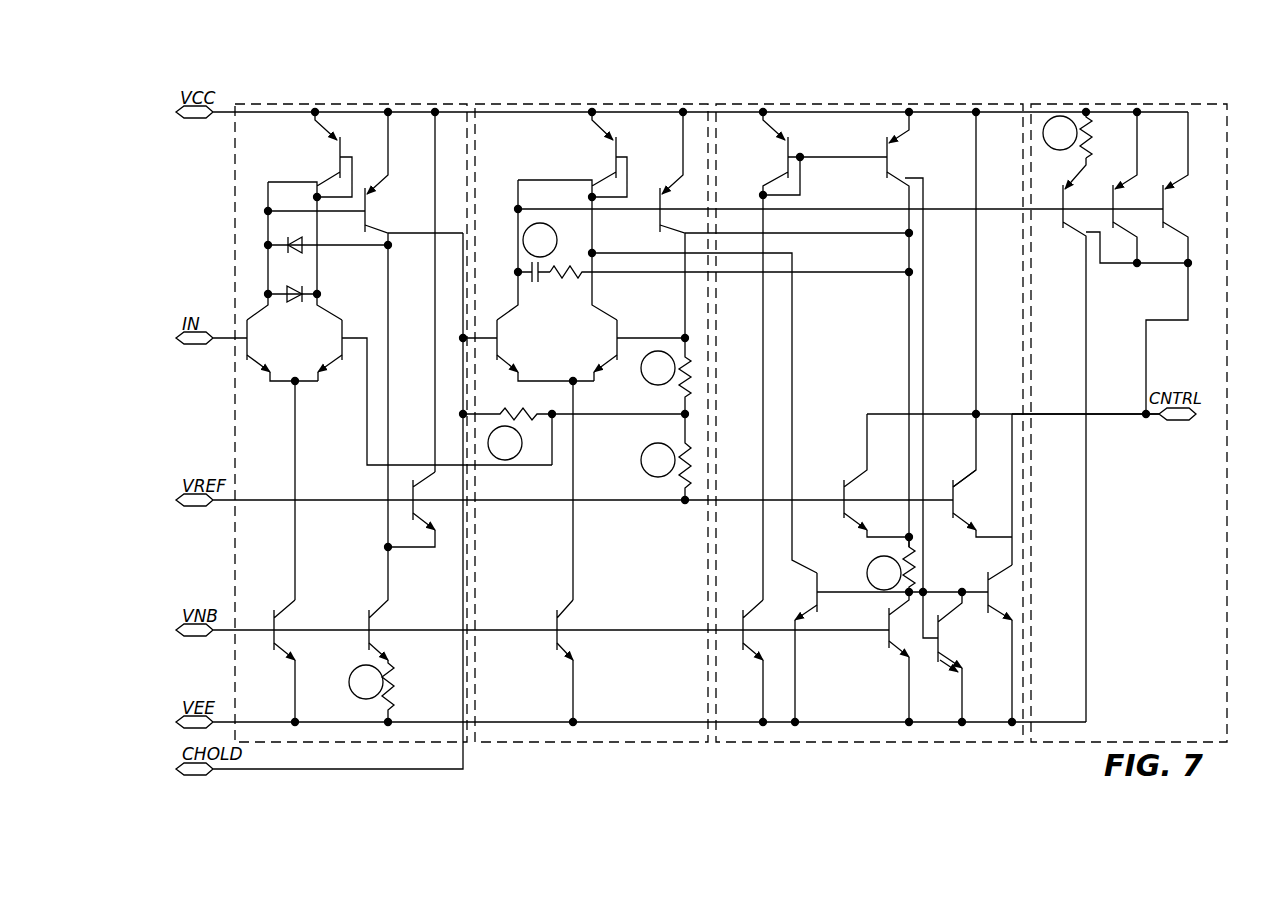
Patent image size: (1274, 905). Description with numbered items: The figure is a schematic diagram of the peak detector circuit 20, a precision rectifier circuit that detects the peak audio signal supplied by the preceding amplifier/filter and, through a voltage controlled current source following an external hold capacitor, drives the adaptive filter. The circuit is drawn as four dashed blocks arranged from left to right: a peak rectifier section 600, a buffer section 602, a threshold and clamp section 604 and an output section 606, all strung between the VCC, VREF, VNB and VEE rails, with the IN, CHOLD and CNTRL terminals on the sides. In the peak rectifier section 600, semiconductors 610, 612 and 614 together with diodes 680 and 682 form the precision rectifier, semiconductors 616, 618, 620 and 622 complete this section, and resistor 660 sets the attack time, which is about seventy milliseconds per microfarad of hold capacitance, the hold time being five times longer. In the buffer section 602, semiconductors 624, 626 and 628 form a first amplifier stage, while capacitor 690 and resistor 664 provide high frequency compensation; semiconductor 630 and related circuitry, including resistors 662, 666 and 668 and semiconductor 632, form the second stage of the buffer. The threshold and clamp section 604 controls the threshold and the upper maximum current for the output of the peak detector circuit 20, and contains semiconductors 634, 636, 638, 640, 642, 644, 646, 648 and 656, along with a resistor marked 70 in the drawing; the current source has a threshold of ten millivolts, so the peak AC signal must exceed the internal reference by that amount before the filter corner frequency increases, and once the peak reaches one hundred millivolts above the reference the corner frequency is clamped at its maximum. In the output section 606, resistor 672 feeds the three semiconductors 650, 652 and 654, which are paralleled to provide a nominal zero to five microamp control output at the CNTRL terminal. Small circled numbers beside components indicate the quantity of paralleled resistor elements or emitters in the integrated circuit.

The peak detector circuit 20 is at (1217, 86).
The peak rectifier section 600 is at (350, 97).
The buffer section 602 is at (563, 97).
The threshold and clamp section 604 is at (837, 97).
The output section 606 is at (1053, 97).
The semiconductor 614 is at (314, 143).
The semiconductor 616 is at (383, 193).
The diode 680 is at (296, 231).
The diode 682 is at (292, 285).
The semiconductor 610 is at (260, 325).
The semiconductor 612 is at (330, 342).
The semiconductor 618 is at (415, 497).
The semiconductor 620 is at (290, 596).
The semiconductor 622 is at (386, 596).
The resistor 660 is at (381, 700).
The semiconductor 628 is at (602, 168).
The semiconductor 630 is at (657, 185).
The capacitor 690 is at (528, 270).
The resistor 664 is at (554, 280).
The semiconductor 624 is at (516, 322).
The semiconductor 626 is at (603, 312).
The resistor 662 is at (522, 407).
The resistor 666 is at (677, 395).
The resistor 668 is at (677, 483).
The semiconductor 632 is at (558, 606).
The semiconductor 634 is at (778, 168).
The semiconductor 636 is at (911, 143).
The semiconductor 642 is at (855, 476).
The semiconductor 648 is at (956, 482).
The resistor 70 is at (897, 556).
The semiconductor 638 is at (750, 607).
The semiconductor 640 is at (820, 603).
The semiconductor 644 is at (894, 658).
The semiconductor 646 is at (942, 613).
The semiconductor 656 is at (990, 626).
The resistor 672 is at (1083, 155).
The semiconductor 650 is at (1080, 242).
The semiconductor 652 is at (1128, 185).
The semiconductor 654 is at (1180, 185).